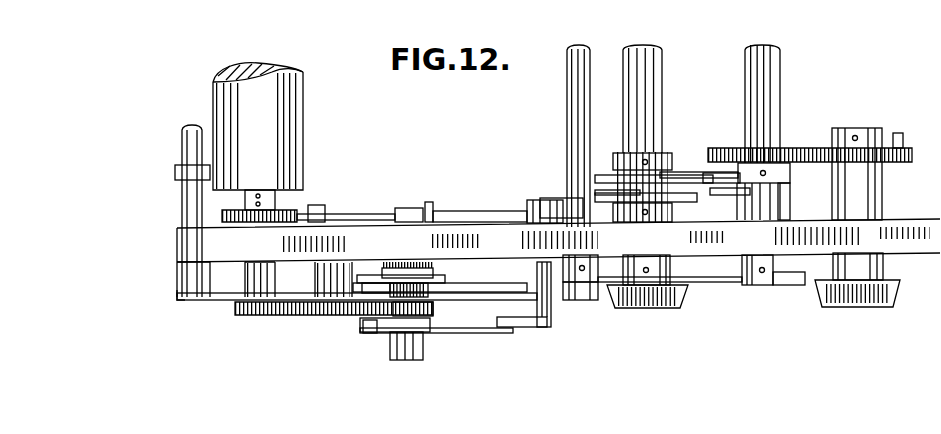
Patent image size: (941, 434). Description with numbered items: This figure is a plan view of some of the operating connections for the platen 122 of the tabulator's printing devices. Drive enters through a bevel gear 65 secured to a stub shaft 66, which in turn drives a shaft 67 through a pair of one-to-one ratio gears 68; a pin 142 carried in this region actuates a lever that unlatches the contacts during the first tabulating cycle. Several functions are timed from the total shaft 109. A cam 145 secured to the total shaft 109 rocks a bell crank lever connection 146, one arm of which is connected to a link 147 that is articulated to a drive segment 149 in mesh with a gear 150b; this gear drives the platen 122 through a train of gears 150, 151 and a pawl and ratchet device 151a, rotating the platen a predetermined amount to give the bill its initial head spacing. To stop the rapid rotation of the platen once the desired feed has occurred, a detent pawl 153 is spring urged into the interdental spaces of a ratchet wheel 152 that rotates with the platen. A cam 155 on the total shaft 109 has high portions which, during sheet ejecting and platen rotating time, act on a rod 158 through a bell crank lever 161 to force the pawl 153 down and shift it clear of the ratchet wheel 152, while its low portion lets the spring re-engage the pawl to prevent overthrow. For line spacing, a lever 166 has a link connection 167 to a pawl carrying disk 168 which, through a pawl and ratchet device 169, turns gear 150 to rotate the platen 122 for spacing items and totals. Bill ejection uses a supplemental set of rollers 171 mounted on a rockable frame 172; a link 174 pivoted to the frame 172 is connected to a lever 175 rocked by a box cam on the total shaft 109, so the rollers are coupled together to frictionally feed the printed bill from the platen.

The platen 122 is at (285, 122).
The supplemental set of rollers 171 is at (177, 176).
The ratchet wheel 152 is at (285, 211).
The detent pawl 153 is at (378, 212).
The gear 150b is at (420, 283).
The rod 158 is at (505, 211).
The bell crank lever 161 is at (587, 212).
The cam 155 is at (653, 197).
The cam 145 is at (687, 177).
The shaft 67 is at (772, 100).
The one-to-one ratio gears 68 is at (843, 148).
The pin 142 is at (902, 138).
The stub shaft 66 is at (870, 188).
The pawl and ratchet device 151a is at (400, 287).
The drive segment 149 is at (478, 283).
The rockable frame 172 is at (183, 295).
The link 174 is at (222, 301).
The gear 151 is at (305, 317).
The pawl carrying disk 168 is at (368, 328).
The gear 150 is at (418, 318).
The pawl and ratchet device 169 is at (403, 327).
The link connection 167 is at (482, 333).
The lever 166 is at (522, 323).
The lever 175 is at (577, 290).
The total shaft 109 is at (637, 288).
The link 147 is at (712, 282).
The bell crank lever connection 146 is at (732, 195).
The bevel gear 65 is at (868, 302).